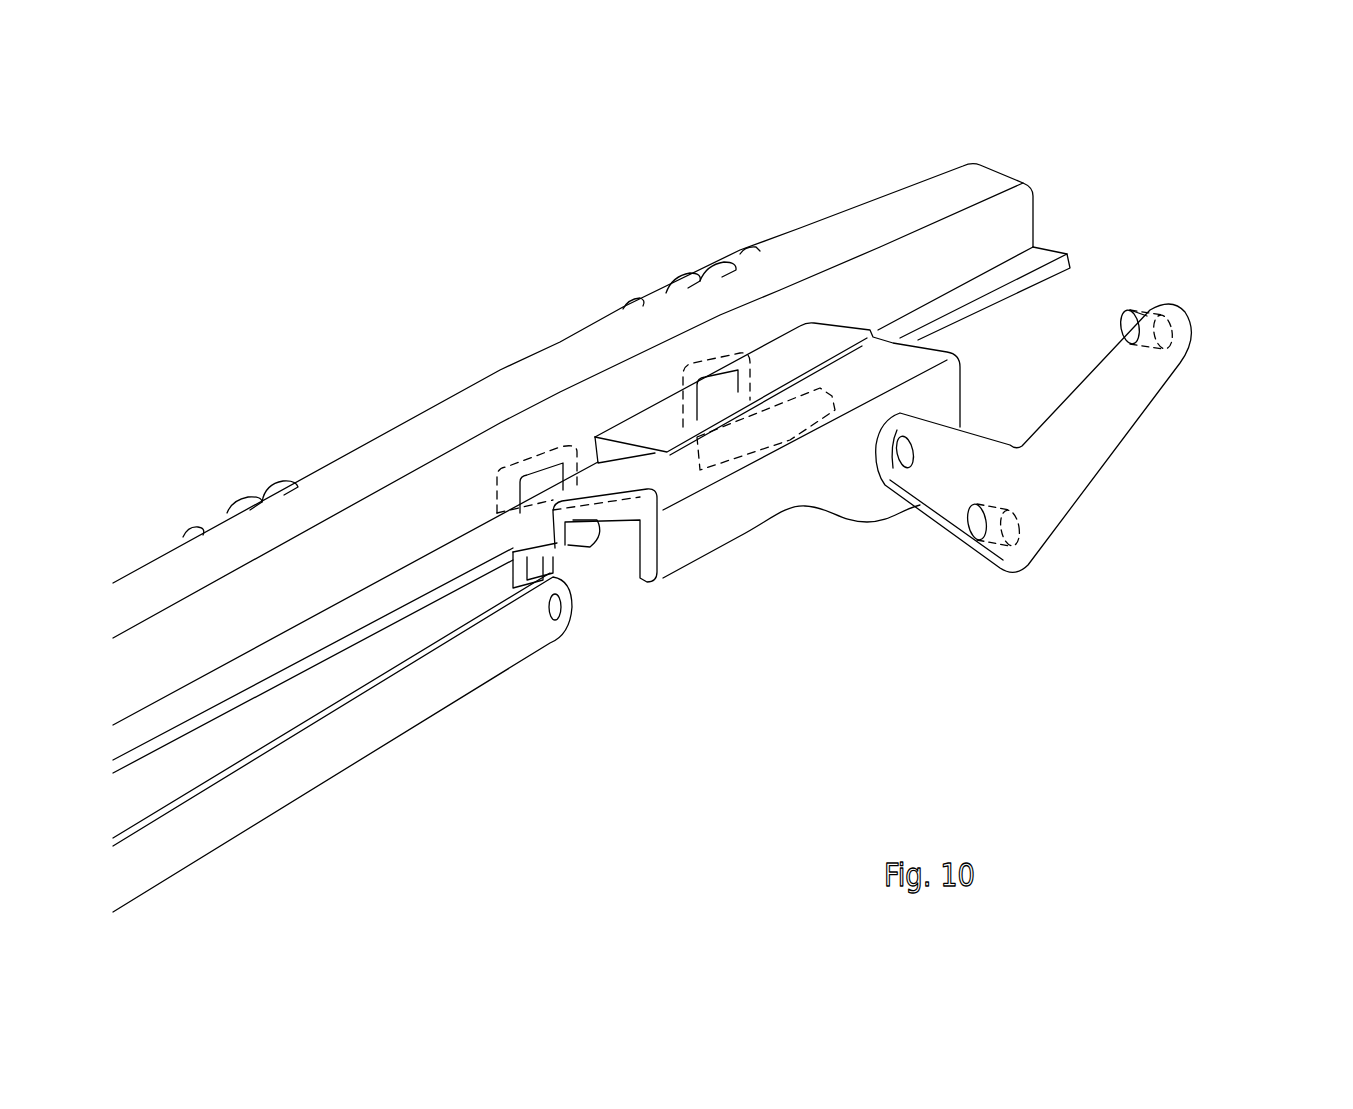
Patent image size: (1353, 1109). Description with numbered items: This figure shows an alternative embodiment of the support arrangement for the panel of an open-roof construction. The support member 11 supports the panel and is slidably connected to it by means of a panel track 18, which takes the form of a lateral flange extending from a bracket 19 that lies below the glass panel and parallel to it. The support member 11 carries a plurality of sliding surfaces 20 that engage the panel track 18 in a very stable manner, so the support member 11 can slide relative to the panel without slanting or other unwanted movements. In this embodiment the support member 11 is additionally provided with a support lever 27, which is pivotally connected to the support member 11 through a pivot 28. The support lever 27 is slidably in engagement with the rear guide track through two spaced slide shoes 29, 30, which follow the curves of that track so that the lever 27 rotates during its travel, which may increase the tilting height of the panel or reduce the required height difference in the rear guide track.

The support member 11 is at (743, 513).
The panel track 18 is at (257, 660).
The bracket 19 is at (374, 468).
The sliding surfaces 20 is at (663, 390).
The support lever 27 is at (1087, 447).
The pivot 28 is at (910, 457).
The slide shoe 29 is at (1005, 540).
The slide shoe 30 is at (1165, 345).